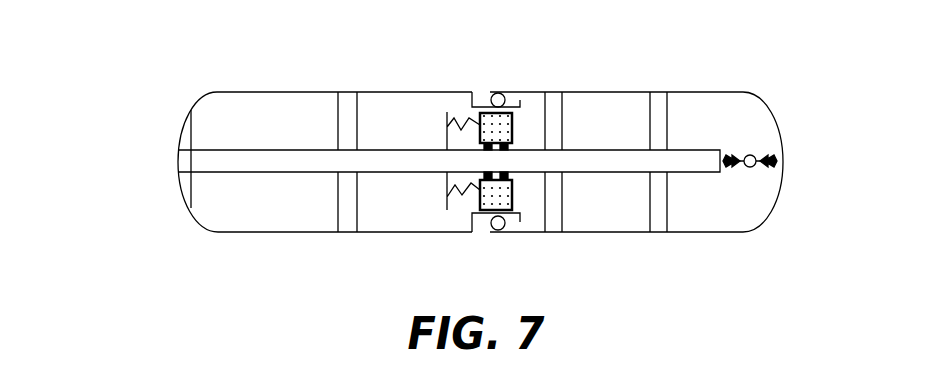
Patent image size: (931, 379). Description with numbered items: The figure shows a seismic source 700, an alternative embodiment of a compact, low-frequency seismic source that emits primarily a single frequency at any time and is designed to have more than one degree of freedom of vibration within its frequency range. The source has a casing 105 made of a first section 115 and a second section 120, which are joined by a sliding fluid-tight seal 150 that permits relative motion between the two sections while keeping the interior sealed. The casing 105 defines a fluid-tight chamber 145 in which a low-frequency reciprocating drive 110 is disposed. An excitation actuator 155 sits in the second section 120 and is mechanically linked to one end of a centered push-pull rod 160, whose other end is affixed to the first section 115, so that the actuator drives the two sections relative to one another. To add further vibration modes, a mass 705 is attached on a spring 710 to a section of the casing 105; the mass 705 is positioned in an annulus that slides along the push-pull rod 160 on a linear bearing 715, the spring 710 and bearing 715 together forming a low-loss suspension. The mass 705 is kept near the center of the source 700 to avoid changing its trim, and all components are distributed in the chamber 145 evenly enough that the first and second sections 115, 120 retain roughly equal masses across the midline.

The seismic source 700 is at (140, 19).
The casing 105 is at (163, 96).
The low-frequency reciprocating drive 110 is at (745, 138).
The first section 115 is at (248, 91).
The second section 120 is at (691, 92).
The chamber 145 is at (367, 223).
The sliding fluid-tight seal 150 is at (492, 72).
The excitation actuator 155 is at (745, 167).
The push-pull rod 160 is at (260, 150).
The mass 705 is at (510, 200).
The spring 710 is at (470, 183).
The linear bearing 715 is at (513, 176).